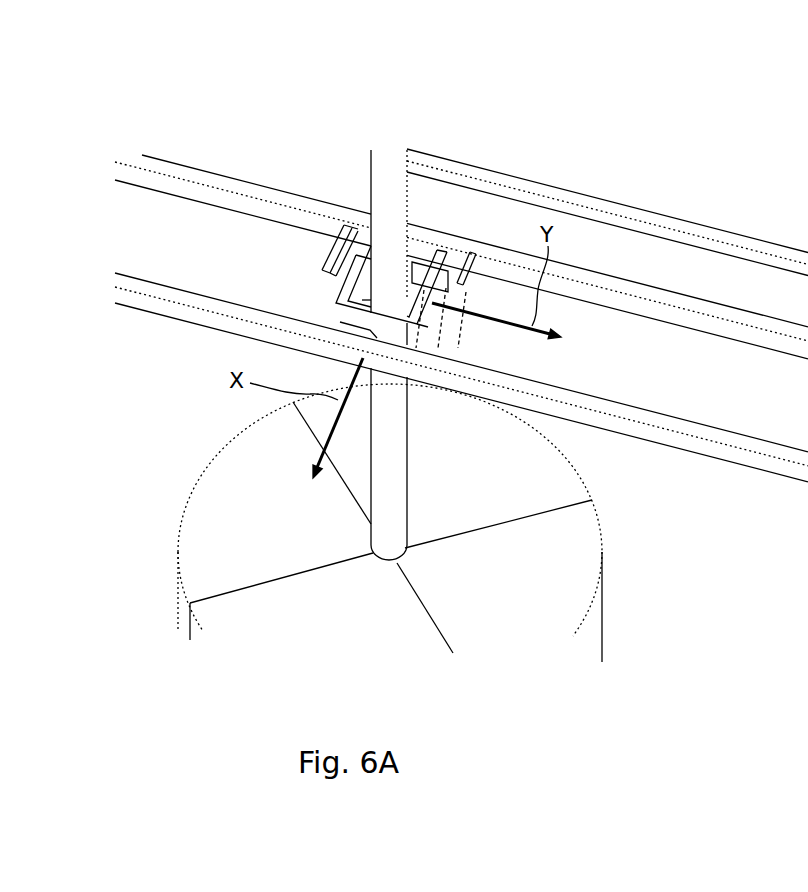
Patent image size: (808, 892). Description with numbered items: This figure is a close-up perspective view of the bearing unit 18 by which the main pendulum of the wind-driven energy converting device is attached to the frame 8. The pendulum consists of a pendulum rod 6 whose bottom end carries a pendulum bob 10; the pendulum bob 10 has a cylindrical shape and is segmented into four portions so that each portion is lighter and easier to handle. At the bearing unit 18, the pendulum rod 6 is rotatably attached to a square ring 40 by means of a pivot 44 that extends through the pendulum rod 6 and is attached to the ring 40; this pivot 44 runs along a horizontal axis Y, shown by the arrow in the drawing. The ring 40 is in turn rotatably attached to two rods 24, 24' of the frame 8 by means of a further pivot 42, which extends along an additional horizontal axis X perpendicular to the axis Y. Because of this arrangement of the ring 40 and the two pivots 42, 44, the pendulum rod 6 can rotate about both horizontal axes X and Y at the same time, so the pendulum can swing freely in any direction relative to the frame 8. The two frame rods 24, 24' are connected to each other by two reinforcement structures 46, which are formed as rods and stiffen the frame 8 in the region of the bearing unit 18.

The pendulum rod 6 is at (408, 461).
The frame 8 is at (588, 176).
The pendulum bob 10 is at (603, 606).
The bearing unit 18 is at (352, 228).
The rod of the frame 24 is at (461, 254).
The rod of the frame 24' is at (460, 377).
The square ring 40 is at (430, 322).
The pivot 42 is at (365, 333).
The pivot 44 is at (410, 293).
The reinforcement structure 46 is at (462, 268).